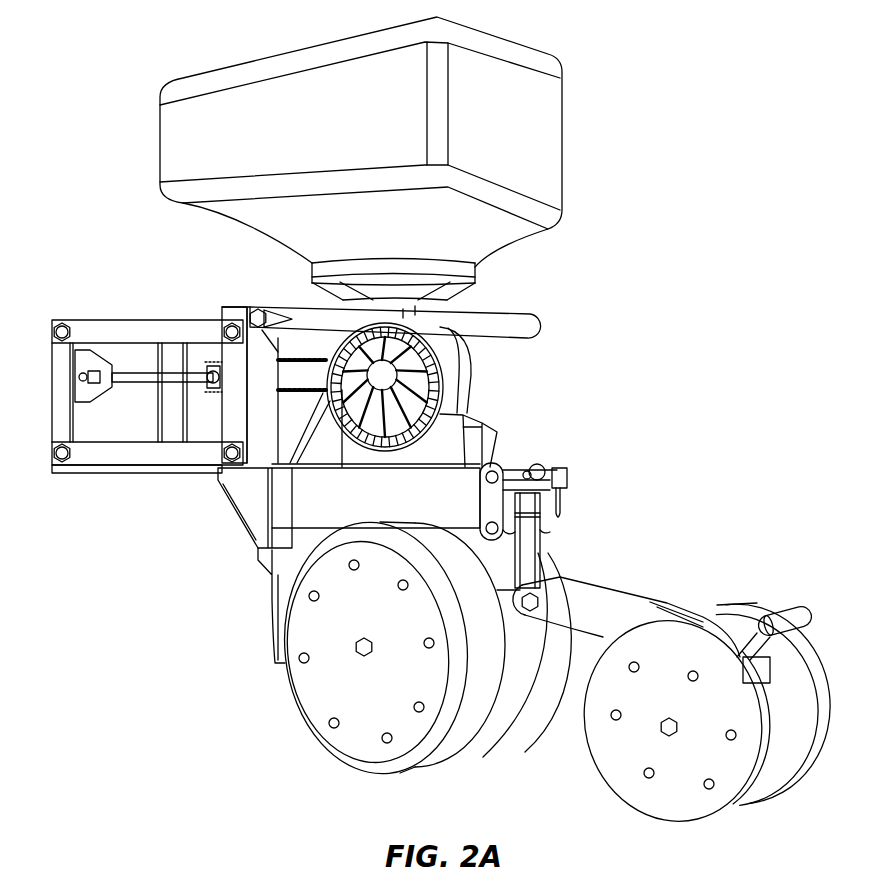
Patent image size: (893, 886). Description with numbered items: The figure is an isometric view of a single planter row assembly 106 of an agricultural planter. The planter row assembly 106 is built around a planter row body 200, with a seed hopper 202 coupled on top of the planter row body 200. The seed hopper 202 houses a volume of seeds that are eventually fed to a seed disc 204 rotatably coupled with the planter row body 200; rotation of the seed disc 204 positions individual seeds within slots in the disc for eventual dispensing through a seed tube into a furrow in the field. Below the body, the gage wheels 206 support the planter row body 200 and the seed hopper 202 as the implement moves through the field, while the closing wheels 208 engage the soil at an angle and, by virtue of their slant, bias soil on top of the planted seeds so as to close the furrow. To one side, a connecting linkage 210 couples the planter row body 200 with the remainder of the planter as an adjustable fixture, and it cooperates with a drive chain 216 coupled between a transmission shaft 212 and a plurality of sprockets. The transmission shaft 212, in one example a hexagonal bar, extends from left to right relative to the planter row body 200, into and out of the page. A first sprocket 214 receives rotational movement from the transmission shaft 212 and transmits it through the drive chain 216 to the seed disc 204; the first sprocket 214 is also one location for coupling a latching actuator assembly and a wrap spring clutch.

The planter row assembly 106 is at (762, 54).
The planter row body 200 is at (238, 517).
The seed hopper 202 is at (550, 143).
The seed disc 204 is at (430, 387).
The gage wheel 206 is at (315, 693).
The closing wheel 208 is at (620, 743).
The connecting linkage 210 is at (108, 458).
The transmission shaft 212 is at (128, 377).
The first sprocket 214 is at (212, 392).
The drive chain 216 is at (305, 392).